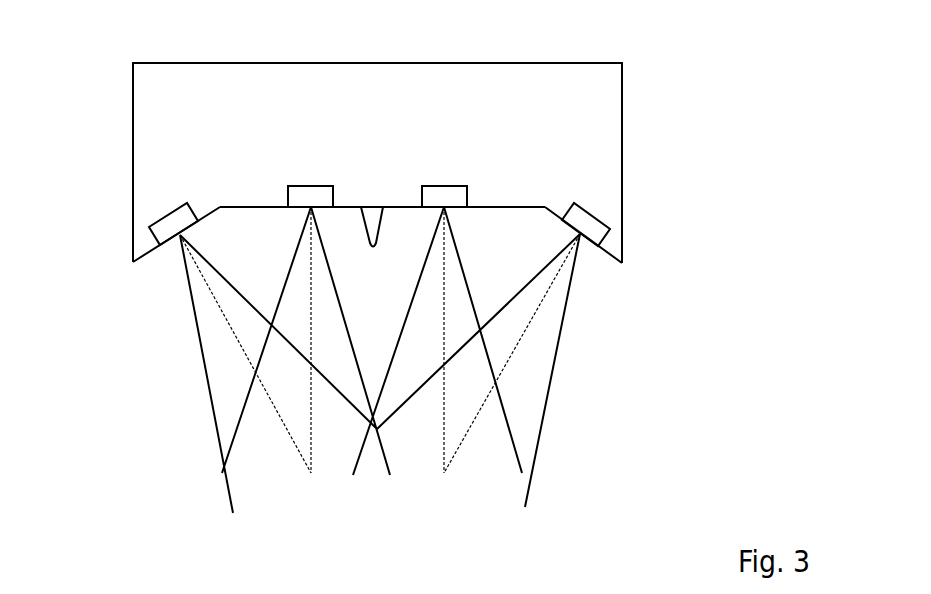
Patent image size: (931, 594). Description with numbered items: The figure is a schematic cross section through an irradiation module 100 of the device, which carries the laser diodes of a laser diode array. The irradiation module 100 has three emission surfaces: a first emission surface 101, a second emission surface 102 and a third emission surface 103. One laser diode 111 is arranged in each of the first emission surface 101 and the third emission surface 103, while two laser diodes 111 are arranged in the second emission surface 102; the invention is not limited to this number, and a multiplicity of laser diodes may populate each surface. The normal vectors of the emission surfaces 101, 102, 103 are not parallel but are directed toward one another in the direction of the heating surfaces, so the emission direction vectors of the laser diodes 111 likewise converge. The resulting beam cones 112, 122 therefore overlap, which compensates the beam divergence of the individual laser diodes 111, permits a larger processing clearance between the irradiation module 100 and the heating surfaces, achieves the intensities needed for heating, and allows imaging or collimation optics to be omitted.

The irradiation module 100 is at (600, 140).
The first emission surface 101 is at (150, 254).
The second emission surface 102 is at (383, 207).
The third emission surface 103 is at (607, 253).
The laser diode 111 is at (310, 195).
The beam cone 112 is at (535, 385).
The beam cone 122 is at (445, 340).